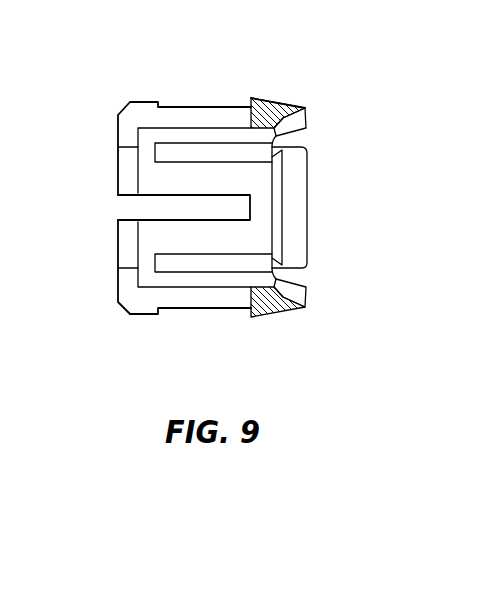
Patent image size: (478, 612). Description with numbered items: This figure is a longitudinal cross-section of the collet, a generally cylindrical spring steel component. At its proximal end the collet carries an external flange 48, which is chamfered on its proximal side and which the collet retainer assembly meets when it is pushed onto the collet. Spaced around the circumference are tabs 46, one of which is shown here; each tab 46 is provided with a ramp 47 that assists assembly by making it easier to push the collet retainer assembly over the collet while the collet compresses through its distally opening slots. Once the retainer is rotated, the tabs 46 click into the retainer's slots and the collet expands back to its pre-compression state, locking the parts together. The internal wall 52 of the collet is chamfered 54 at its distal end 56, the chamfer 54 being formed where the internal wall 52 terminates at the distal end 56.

The tab 46 is at (325, 95).
The ramp 47 is at (272, 102).
The external flange 48 is at (142, 102).
The internal wall 52 is at (280, 281).
The chamfer 54 is at (290, 127).
The distal end 56 is at (308, 203).